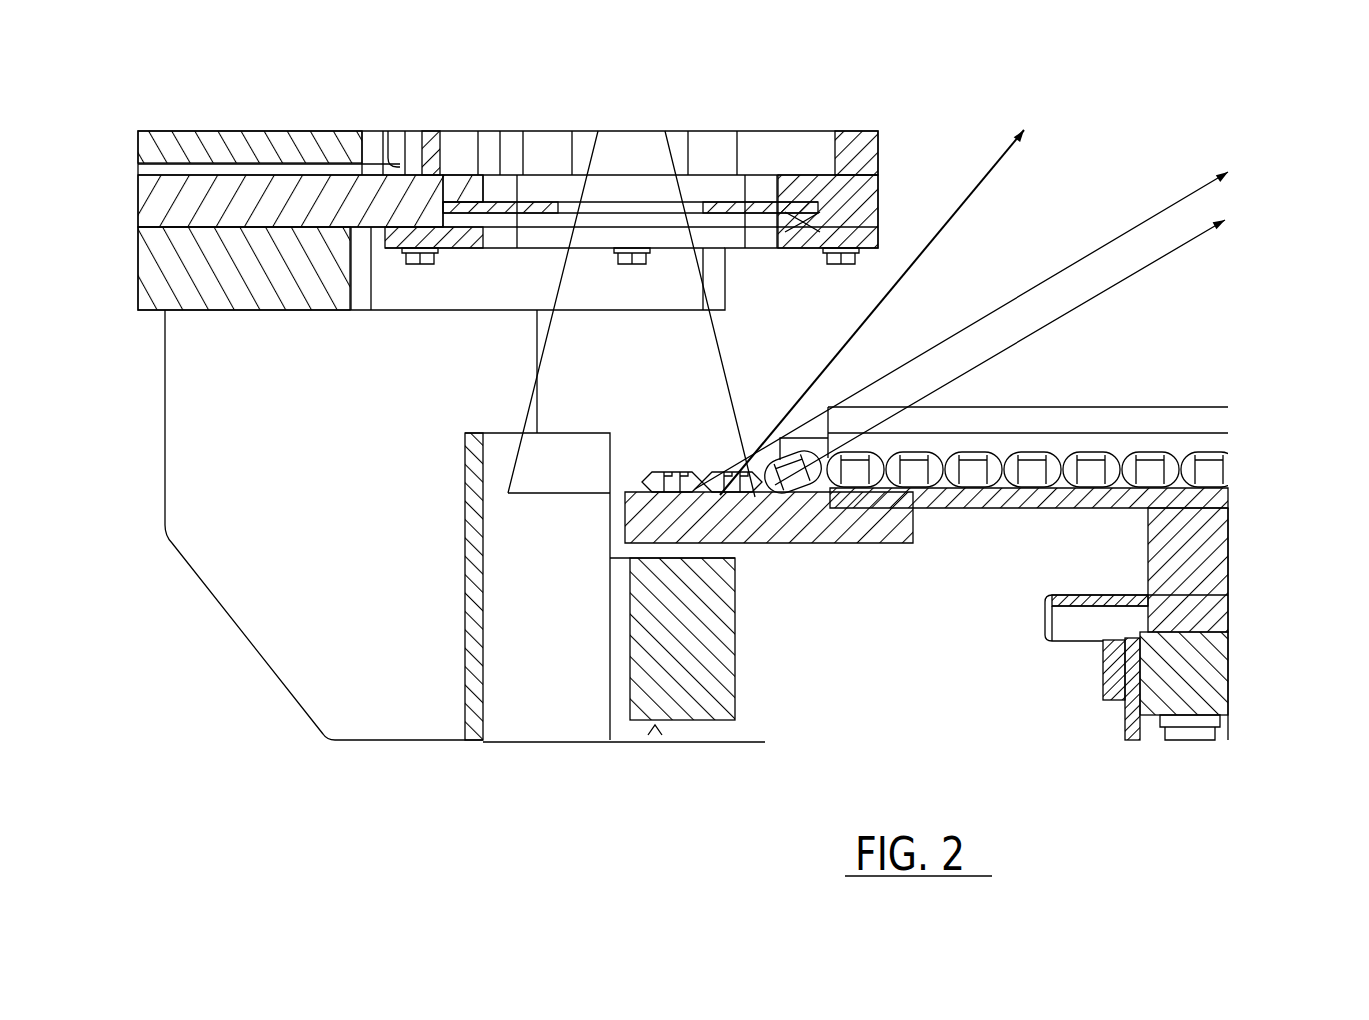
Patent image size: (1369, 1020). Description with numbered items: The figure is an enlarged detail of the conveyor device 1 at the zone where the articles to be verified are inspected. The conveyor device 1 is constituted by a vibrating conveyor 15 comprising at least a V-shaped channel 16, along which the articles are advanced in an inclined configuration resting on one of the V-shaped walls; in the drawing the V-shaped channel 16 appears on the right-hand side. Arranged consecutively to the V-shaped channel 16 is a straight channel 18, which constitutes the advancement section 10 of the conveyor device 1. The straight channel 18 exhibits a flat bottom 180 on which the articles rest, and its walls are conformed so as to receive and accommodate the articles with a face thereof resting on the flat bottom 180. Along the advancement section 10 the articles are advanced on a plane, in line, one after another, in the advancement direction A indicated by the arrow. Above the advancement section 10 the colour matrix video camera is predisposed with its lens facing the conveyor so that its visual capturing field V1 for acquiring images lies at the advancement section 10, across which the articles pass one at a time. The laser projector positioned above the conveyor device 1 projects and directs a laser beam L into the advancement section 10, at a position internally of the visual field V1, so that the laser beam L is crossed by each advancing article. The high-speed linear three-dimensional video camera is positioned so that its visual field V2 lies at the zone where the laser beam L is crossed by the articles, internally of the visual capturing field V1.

The conveyor device 1 is at (1170, 517).
The advancement section 10 is at (757, 502).
The vibrating conveyor 15 is at (1217, 492).
The V-shaped channel 16 is at (1097, 443).
The straight channel 18 is at (632, 487).
The flat bottom 180 is at (632, 500).
The advancement direction A is at (757, 515).
The laser beam L is at (960, 212).
The visual capturing field V1 is at (633, 456).
The visual field V2 is at (772, 457).